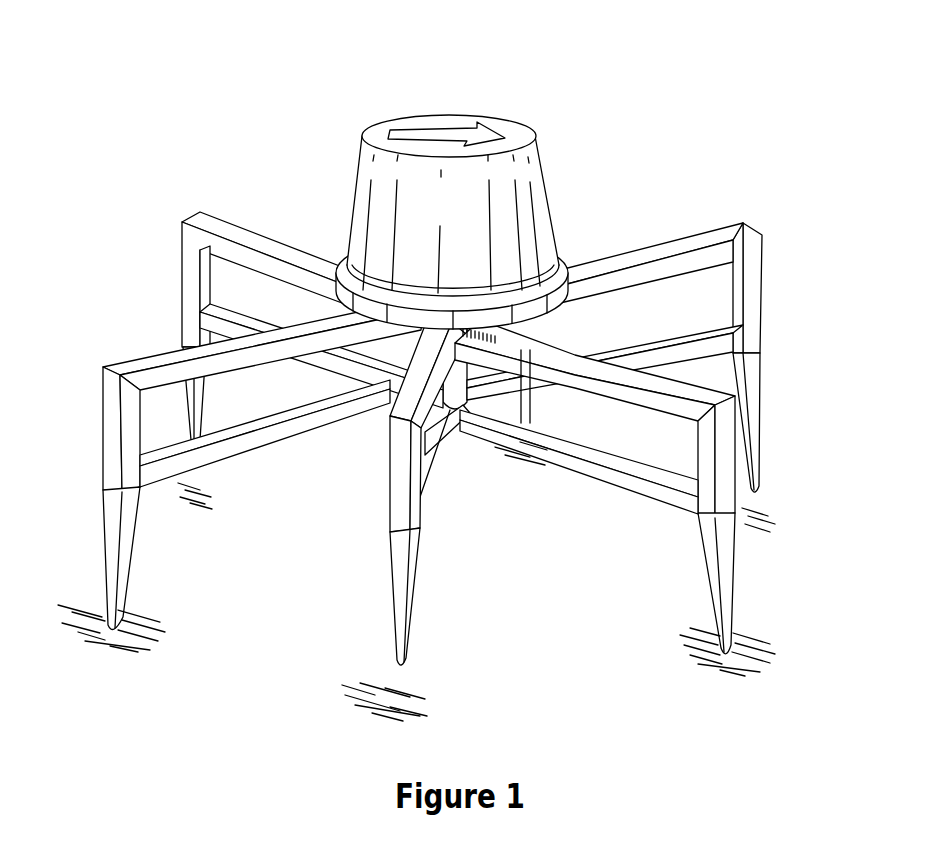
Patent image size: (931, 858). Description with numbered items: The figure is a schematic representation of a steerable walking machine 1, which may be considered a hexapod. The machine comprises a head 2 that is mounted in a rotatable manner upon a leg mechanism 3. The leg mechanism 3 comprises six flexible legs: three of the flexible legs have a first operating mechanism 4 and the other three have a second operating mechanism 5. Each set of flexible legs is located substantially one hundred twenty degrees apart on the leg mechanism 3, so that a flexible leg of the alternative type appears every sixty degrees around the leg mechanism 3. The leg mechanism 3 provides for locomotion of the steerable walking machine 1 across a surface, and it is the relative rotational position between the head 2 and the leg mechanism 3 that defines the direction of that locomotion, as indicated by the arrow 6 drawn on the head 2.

The steerable walking machine 1 is at (443, 360).
The head 2 is at (452, 175).
The leg mechanism 3 is at (443, 426).
The first operating mechanism 4 is at (108, 428).
The second operating mechanism 5 is at (231, 228).
The arrow 6 is at (453, 134).